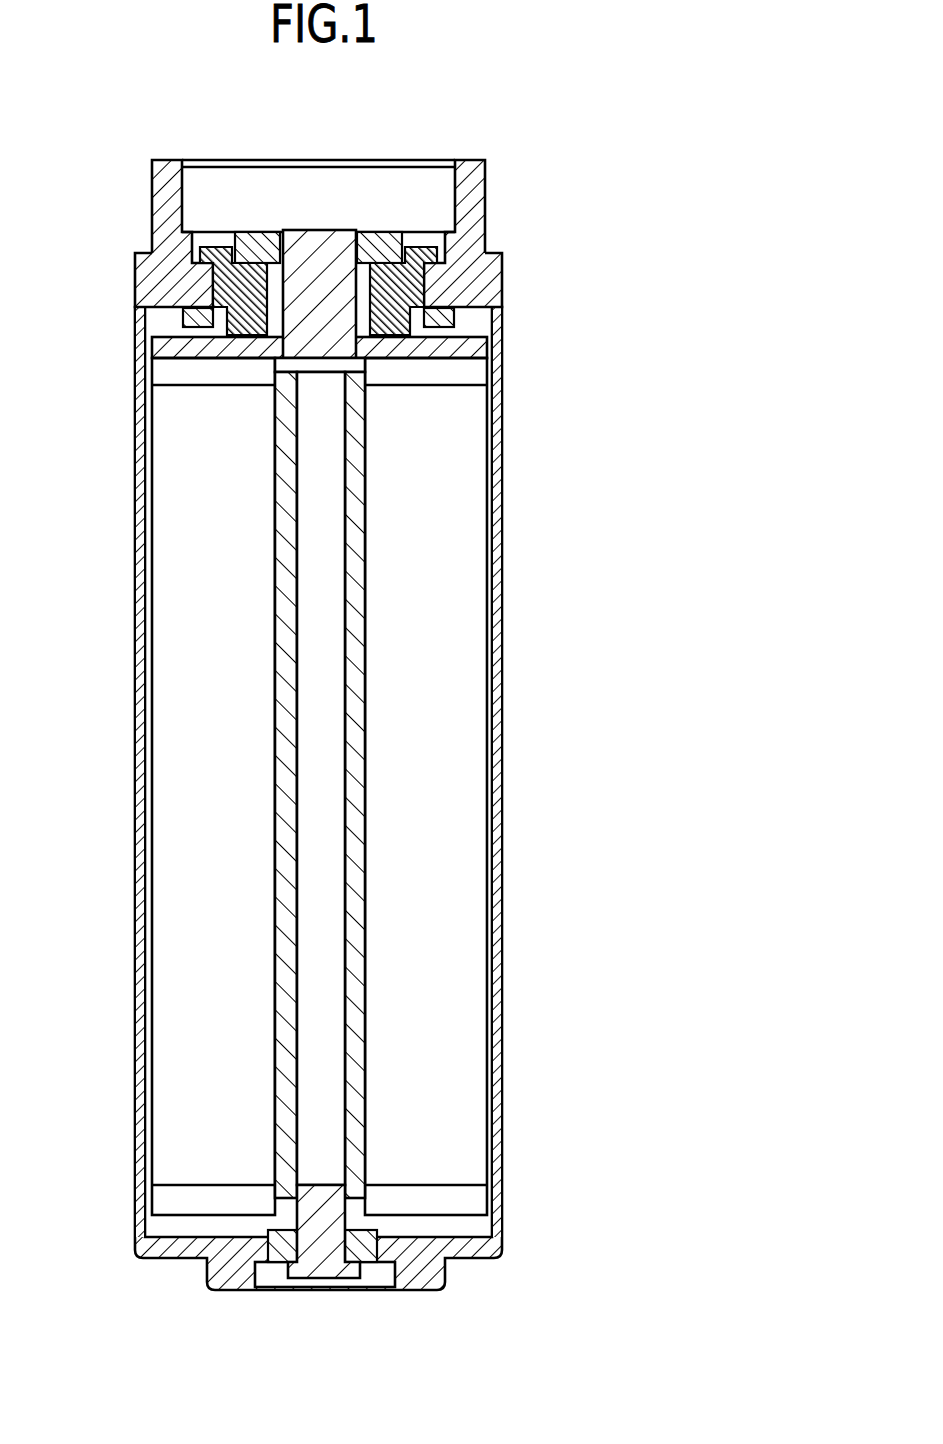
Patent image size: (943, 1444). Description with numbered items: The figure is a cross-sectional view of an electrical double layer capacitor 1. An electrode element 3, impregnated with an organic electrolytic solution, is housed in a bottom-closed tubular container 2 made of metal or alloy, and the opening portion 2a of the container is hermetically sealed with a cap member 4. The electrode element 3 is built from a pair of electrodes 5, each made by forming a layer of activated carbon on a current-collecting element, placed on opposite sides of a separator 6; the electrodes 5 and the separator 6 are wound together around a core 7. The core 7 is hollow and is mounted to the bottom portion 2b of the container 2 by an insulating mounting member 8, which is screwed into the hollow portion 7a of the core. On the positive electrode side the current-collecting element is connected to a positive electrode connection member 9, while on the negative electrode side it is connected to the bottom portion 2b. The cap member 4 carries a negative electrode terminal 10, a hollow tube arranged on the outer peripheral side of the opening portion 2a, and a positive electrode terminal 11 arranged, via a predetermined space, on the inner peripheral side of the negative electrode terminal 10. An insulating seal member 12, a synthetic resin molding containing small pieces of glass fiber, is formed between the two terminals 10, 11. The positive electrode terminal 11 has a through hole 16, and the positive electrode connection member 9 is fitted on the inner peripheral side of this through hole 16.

The electrical double layer capacitor 1 is at (412, 714).
The bottom-closed tubular container 2 is at (503, 672).
The opening portion 2a is at (527, 290).
The bottom portion 2b is at (490, 1279).
The electrode element 3 is at (332, 788).
The cap member 4 is at (360, 214).
The electrodes 5 is at (493, 763).
The separator 6 is at (490, 378).
The core 7 is at (214, 778).
The hollow portion 7a is at (298, 1048).
The insulating mounting member 8 is at (330, 1280).
The positive electrode connection member 9 is at (486, 337).
The negative electrode terminal 10 is at (484, 212).
The positive electrode terminal 11 is at (385, 232).
The insulating seal member 12 is at (428, 248).
The through hole 16 is at (322, 229).